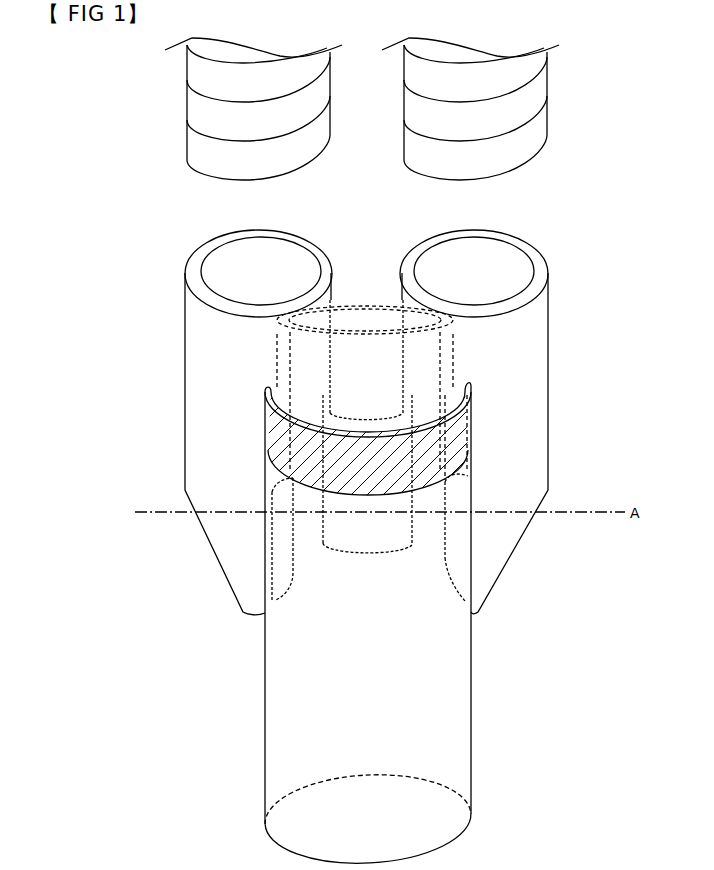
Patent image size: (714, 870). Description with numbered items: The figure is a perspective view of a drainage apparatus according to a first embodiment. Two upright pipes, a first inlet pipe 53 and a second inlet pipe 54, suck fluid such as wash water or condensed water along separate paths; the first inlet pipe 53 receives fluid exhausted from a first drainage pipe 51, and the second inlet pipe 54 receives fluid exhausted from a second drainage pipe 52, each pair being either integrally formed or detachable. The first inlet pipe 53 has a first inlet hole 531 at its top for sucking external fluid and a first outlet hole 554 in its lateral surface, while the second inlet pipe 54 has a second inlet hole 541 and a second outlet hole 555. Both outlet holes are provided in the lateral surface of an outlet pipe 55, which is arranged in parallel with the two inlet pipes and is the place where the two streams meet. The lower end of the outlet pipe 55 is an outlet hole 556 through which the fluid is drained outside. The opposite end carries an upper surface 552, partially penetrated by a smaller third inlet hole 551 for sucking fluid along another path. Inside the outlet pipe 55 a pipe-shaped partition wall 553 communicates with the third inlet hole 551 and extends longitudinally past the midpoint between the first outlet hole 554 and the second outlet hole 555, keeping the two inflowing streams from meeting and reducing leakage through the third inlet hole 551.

The first drainage pipe 51 is at (332, 87).
The second drainage pipe 52 is at (552, 87).
The first inlet pipe 53 is at (237, 410).
The first inlet hole 531 is at (220, 262).
The second inlet pipe 54 is at (497, 410).
The second inlet hole 541 is at (513, 262).
The outlet pipe 55 is at (265, 712).
The third inlet hole 551 is at (368, 405).
The upper surface 552 is at (272, 447).
The partition wall 553 is at (412, 547).
The first outlet hole 554 is at (283, 553).
The second outlet hole 555 is at (460, 557).
The outlet hole 556 is at (410, 820).